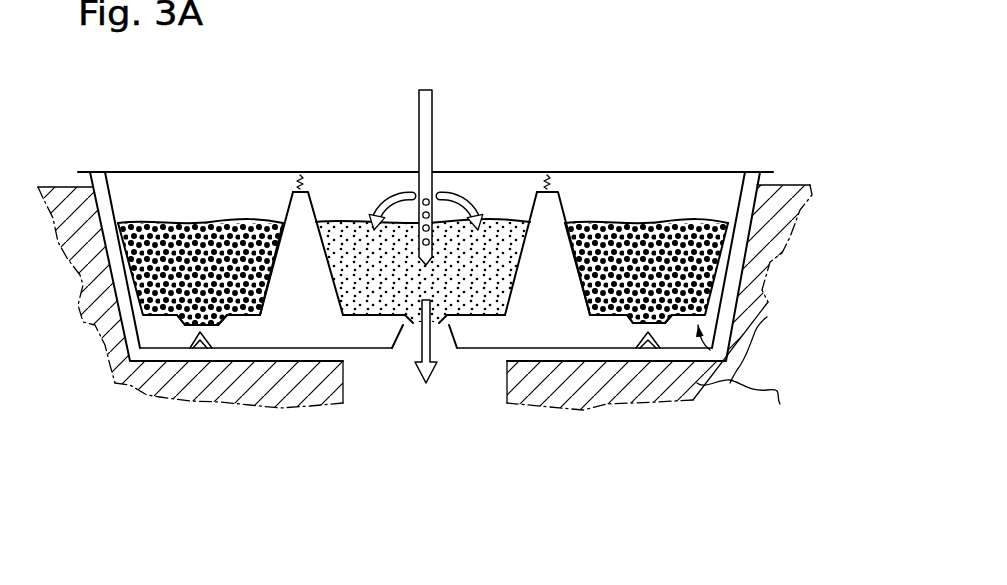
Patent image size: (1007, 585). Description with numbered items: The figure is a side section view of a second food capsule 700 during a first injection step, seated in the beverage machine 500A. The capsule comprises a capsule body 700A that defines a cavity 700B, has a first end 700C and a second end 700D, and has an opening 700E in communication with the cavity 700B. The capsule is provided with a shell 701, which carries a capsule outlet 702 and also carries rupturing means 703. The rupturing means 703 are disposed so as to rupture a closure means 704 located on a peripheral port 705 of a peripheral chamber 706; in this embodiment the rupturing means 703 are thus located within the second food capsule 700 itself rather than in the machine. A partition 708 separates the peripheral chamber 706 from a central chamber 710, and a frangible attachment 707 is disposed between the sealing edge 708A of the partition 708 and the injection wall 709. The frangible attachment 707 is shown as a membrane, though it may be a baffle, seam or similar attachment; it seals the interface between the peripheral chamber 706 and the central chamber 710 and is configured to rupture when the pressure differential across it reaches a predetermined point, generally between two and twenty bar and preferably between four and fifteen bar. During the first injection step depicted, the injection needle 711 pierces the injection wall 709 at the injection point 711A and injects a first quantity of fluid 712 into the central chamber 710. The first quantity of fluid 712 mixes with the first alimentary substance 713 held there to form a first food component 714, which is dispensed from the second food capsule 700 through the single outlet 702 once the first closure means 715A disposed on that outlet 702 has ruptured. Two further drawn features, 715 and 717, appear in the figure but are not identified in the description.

The beverage machine 500A is at (439, 309).
The second food capsule 700 is at (762, 161).
The capsule body 700A is at (760, 320).
The cavity 700B is at (190, 193).
The first end 700C is at (168, 162).
The second end 700D is at (295, 343).
The opening 700E is at (215, 185).
The shell 701 is at (494, 362).
The capsule outlet 702 is at (416, 357).
The rupturing means 703 is at (200, 346).
The closure means 704 is at (190, 333).
The peripheral port 705 is at (222, 330).
The peripheral chamber 706 is at (135, 180).
The frangible attachment 707 is at (291, 182).
The partition 708 is at (282, 250).
The sealing edge 708A is at (312, 186).
The injection wall 709 is at (720, 168).
The central chamber 710 is at (455, 193).
The injection needle 711 is at (425, 107).
The injection point 711A is at (433, 175).
The first quantity of fluid 712 is at (402, 193).
The first alimentary substance 713 is at (480, 248).
The first food component 714 is at (438, 362).
The left outlet wall 715 is at (416, 347).
The first closure means 715A is at (436, 345).
The granular feedstock 717 is at (145, 225).